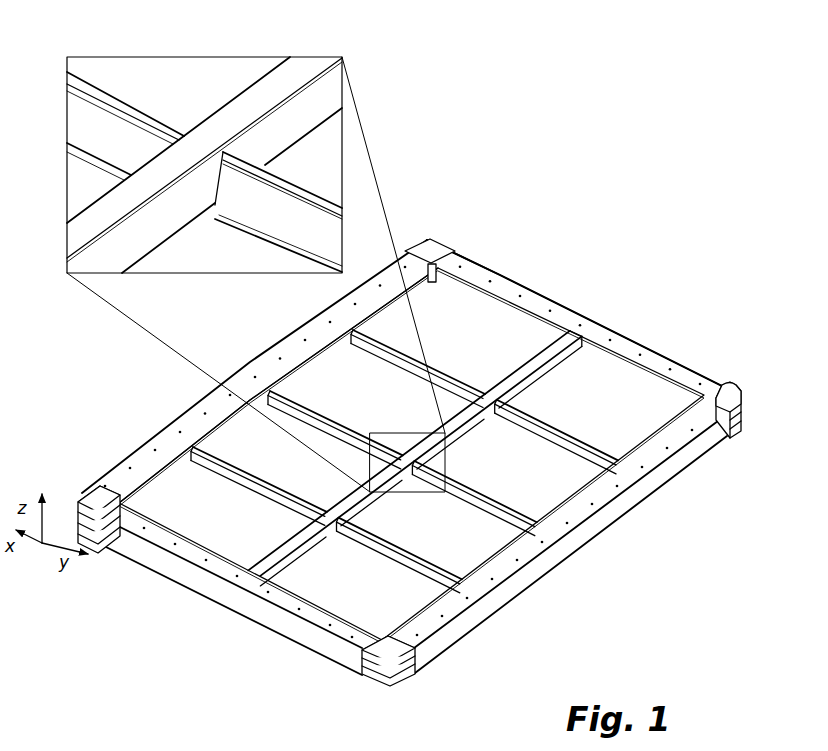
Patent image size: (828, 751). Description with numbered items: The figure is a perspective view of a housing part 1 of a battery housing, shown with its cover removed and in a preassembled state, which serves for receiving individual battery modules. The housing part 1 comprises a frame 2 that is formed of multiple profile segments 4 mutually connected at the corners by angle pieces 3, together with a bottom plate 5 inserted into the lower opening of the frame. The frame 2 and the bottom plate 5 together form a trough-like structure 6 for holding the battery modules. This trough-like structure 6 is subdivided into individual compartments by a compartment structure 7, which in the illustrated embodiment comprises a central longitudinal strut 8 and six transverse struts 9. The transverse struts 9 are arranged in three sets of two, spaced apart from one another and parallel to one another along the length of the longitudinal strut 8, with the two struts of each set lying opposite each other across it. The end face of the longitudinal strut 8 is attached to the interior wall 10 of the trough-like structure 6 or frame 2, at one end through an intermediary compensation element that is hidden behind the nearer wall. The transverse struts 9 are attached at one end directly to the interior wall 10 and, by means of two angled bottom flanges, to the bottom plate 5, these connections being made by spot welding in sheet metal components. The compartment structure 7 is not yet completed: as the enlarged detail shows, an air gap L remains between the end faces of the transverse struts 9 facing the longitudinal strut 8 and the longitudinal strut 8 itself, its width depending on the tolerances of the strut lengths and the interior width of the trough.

The housing part 1 is at (518, 273).
The frame 2 is at (543, 296).
The angle piece 3 is at (731, 385).
The profile segment 4 is at (608, 518).
The bottom plate 5 is at (217, 529).
The trough-like structure 6 is at (233, 442).
The compartment structure 7 is at (529, 361).
The longitudinal strut 8 is at (479, 395).
The transverse strut 9 is at (494, 489).
The interior wall 10 is at (433, 266).
The air gap L is at (225, 145).